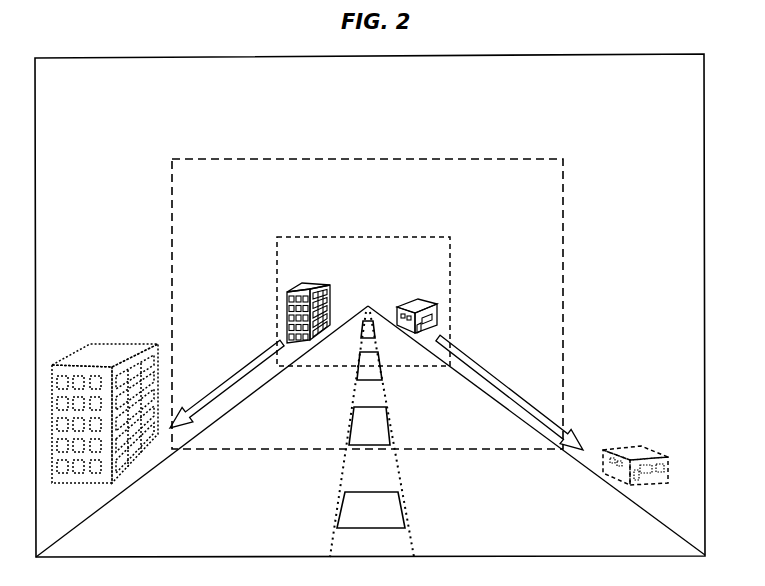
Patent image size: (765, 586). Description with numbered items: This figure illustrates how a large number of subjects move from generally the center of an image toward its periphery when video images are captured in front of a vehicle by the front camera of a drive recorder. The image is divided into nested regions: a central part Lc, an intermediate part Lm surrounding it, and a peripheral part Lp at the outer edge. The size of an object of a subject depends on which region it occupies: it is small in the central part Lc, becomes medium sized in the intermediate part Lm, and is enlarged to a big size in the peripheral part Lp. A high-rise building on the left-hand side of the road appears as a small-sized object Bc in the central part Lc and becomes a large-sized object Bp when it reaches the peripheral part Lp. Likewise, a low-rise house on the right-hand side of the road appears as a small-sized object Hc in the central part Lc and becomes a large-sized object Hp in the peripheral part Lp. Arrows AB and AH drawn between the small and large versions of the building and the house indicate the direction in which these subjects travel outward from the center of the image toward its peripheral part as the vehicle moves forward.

The peripheral part of the image Lp is at (651, 55).
The intermediate part of the image Lm is at (530, 159).
The central part of the image Lc is at (417, 237).
The large-sized object (high-rise building) Bp is at (88, 346).
The small-sized object (high-rise building) Bc is at (304, 283).
The large-sized object (low-rise house) Hp is at (611, 449).
The small-sized object (low-rise house) Hc is at (412, 300).
The motion vector of building AB is at (227, 384).
The motion vector of house AH is at (509, 392).